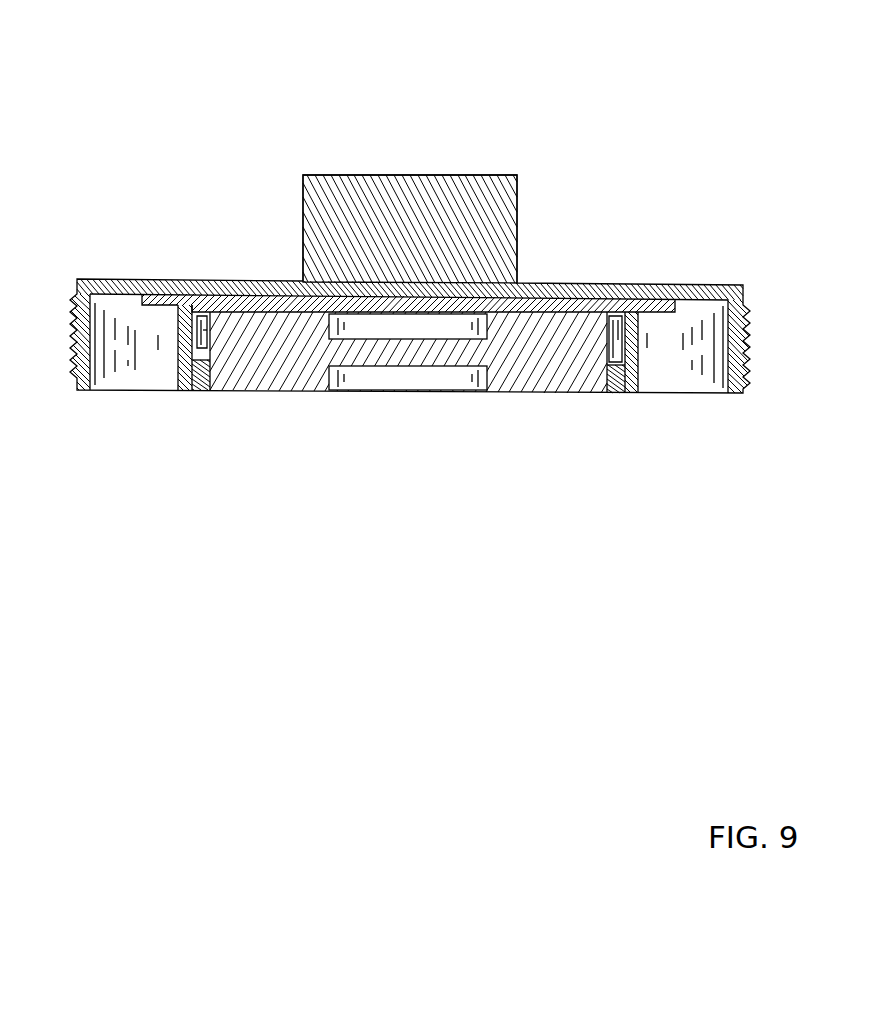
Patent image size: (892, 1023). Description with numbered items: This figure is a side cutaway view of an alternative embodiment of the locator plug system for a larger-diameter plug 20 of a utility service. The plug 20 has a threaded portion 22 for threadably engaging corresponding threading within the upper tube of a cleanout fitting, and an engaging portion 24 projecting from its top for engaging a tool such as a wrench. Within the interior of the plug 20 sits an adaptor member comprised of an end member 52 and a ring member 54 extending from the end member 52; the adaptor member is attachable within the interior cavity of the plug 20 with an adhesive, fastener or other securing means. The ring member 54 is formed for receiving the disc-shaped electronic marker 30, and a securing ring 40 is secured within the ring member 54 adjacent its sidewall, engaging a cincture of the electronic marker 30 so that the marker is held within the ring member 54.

The plug 20 is at (182, 279).
The threaded portion 22 is at (750, 320).
The engaging portion 24 is at (333, 173).
The electronic marker 30 is at (522, 372).
The securing ring 40 is at (200, 372).
The end member 52 is at (168, 303).
The ring member 54 is at (618, 378).